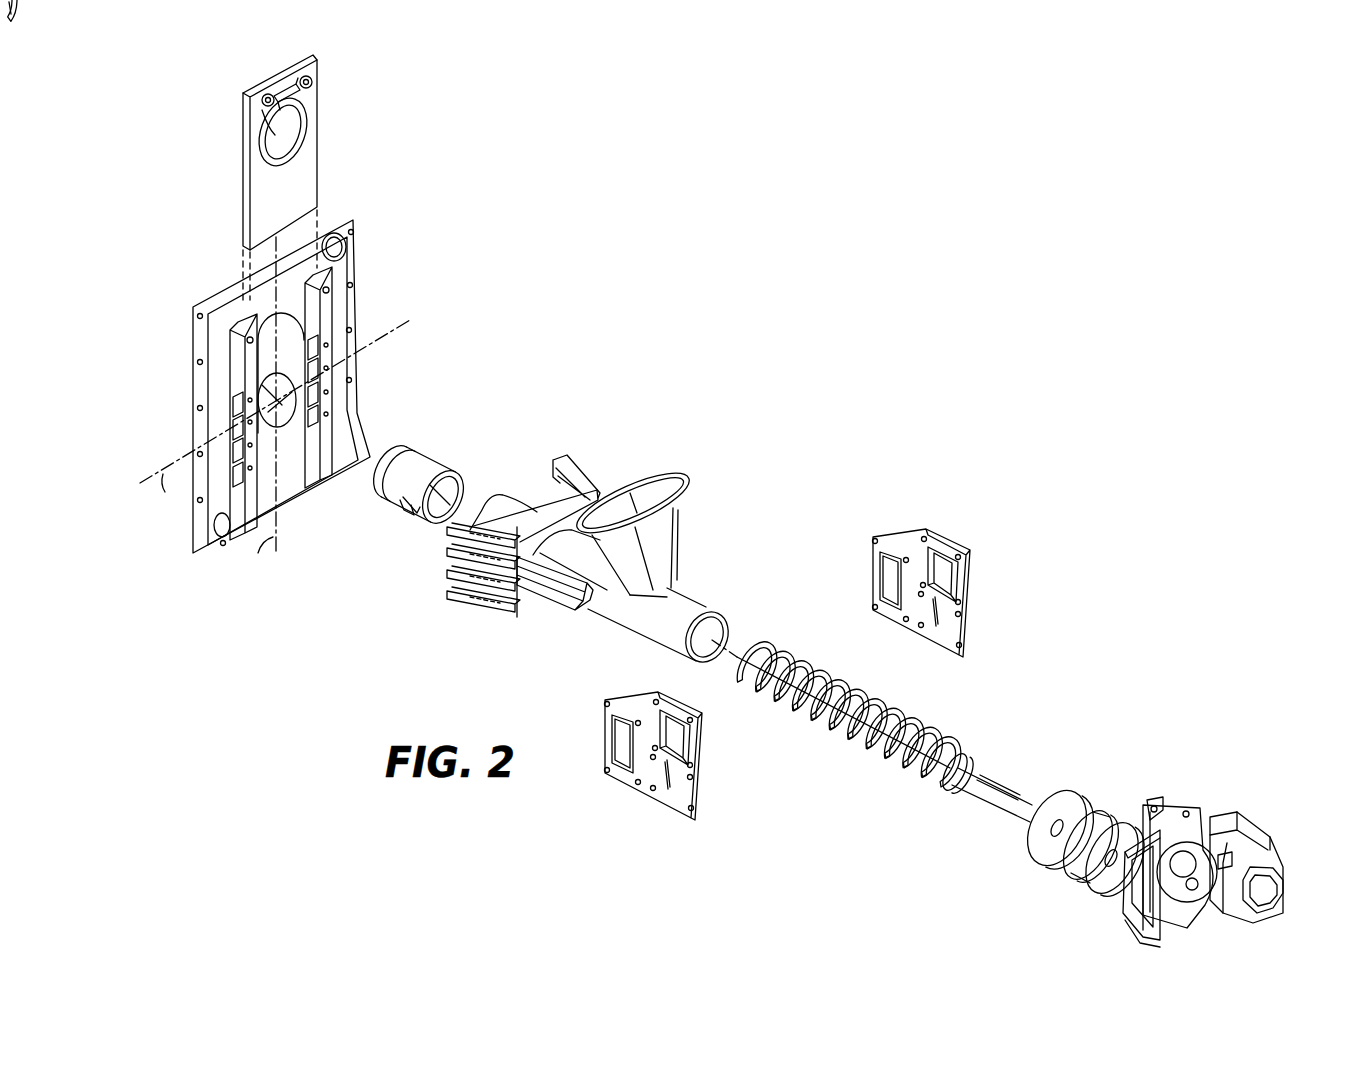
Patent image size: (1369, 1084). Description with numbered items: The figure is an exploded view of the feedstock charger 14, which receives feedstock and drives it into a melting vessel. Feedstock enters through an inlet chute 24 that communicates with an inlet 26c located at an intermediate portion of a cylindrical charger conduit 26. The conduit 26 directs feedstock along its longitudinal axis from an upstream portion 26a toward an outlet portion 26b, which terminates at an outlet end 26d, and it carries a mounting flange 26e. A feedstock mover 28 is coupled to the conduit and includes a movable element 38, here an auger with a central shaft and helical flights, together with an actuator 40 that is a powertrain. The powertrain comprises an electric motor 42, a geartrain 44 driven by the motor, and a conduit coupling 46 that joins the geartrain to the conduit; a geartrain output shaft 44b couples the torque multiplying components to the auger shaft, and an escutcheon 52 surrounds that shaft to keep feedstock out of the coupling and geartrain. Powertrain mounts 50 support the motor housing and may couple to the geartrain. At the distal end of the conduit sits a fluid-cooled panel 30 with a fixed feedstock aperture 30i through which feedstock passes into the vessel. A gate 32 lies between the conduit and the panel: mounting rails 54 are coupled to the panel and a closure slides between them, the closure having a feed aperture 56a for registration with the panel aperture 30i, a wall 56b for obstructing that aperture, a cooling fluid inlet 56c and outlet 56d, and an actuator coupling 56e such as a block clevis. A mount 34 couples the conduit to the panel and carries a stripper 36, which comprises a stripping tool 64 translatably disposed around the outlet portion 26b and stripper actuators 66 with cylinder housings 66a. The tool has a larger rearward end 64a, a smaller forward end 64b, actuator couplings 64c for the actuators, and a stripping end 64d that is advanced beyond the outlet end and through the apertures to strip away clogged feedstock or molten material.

The charger 14 is at (1060, 188).
The inlet chute 24 is at (698, 482).
The charger conduit 26 is at (700, 578).
The upstream portion 26a is at (724, 600).
The outlet portion 26b is at (536, 498).
The inlet 26c is at (675, 547).
The outlet end 26d is at (495, 496).
The mounting flange 26e is at (1028, 868).
The feedstock mover 28 is at (1181, 780).
The fluid-cooled panel 30 is at (371, 212).
The fixed feedstock aperture 30i is at (290, 390).
The gate 32 is at (331, 112).
The mount 34 is at (588, 458).
The stripper 36 is at (441, 430).
The movable element 38 is at (865, 767).
The actuator 40 is at (1229, 804).
The motor 42 is at (1283, 840).
The geartrain 44 is at (1139, 944).
The geartrain output shaft 44b is at (993, 766).
The conduit coupling 46 is at (1072, 895).
The powertrain mount 50 is at (678, 813).
The escutcheon 52 is at (944, 797).
The mounting rails 54 is at (332, 287).
The feed aperture 56a is at (290, 143).
The wall 56b is at (263, 205).
The cooling fluid inlet 56c is at (309, 80).
The cooling fluid outlet 56d is at (266, 104).
The actuator coupling 56e is at (280, 77).
The stripping tool 64 is at (393, 512).
The rearward end 64a is at (463, 480).
The forward end 64b is at (409, 447).
The actuator couplings 64c is at (476, 477).
The stripping end 64d is at (380, 483).
The stripper actuator 66 is at (572, 627).
The cylinder housing 66a is at (560, 603).